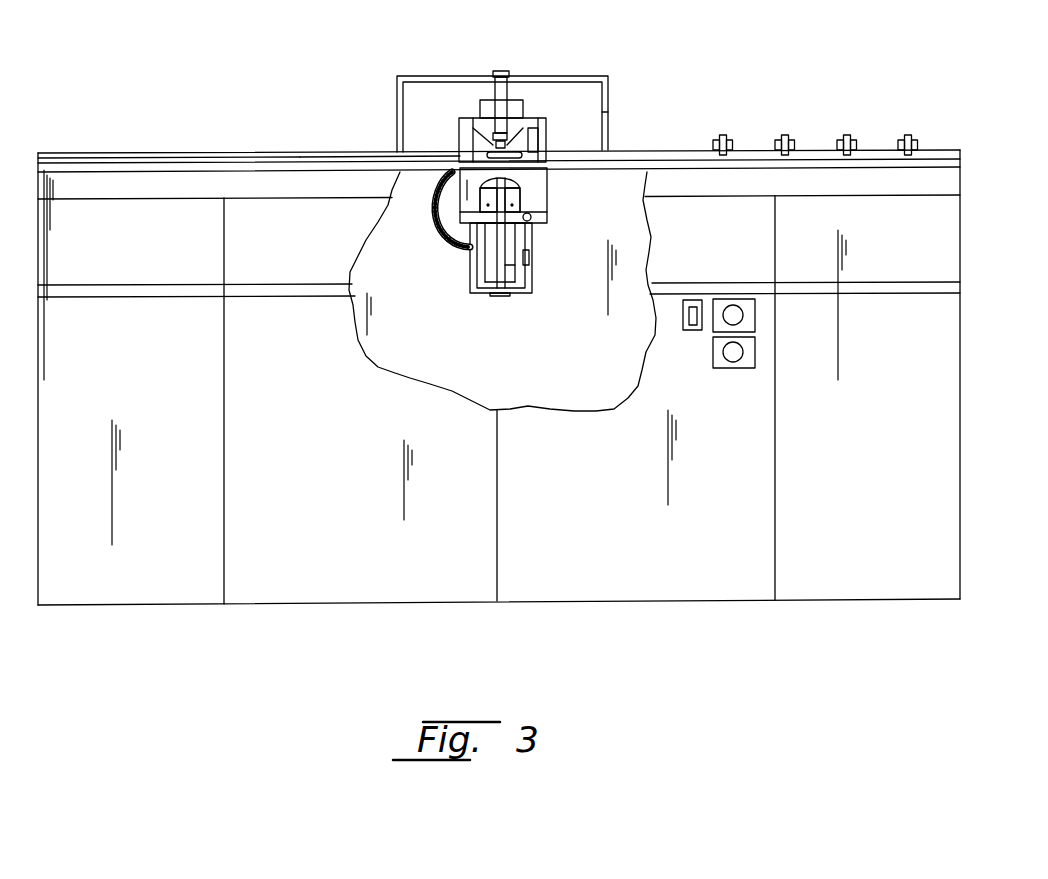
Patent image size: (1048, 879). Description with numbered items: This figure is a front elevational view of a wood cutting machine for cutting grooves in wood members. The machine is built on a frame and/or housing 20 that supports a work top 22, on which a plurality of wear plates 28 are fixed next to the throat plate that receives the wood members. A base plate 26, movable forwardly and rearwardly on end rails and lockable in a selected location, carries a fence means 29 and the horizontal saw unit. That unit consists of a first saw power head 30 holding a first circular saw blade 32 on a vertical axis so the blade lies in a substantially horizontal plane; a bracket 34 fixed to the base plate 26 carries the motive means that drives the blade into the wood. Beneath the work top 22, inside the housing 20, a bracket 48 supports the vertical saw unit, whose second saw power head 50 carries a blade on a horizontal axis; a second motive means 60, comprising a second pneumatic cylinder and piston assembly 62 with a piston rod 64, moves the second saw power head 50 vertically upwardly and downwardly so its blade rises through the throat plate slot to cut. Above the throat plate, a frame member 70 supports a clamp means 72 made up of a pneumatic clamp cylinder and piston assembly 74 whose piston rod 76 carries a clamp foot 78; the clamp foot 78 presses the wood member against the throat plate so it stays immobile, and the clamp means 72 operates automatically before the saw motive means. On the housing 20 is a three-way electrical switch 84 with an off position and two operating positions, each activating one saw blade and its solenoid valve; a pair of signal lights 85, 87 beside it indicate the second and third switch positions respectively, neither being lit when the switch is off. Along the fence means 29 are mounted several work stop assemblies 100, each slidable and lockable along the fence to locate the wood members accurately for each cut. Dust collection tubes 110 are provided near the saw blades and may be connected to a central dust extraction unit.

The frame and/or housing 20 is at (960, 356).
The work top 22 is at (960, 178).
The base plate 26 is at (140, 153).
The wear plates 28 is at (960, 152).
The fence means 29 is at (350, 153).
The first saw power head 30 is at (548, 108).
The first circular saw blade 32 is at (545, 178).
The bracket 34 is at (470, 142).
The bracket 48 is at (500, 188).
The second saw power head 50 is at (460, 273).
The second motive means 60 is at (531, 212).
The second pneumatic cylinder and piston assembly 62 is at (500, 198).
The piston rod 64 is at (515, 268).
The frame member 70 is at (606, 78).
The clamp means 72 is at (501, 71).
The pneumatic clamp cylinder and piston assembly 74 is at (508, 100).
The piston rod 76 is at (478, 128).
The clamp foot 78 is at (487, 152).
The three-way electrical switch 84 is at (683, 310).
The signal light 85 is at (743, 314).
The signal light 87 is at (743, 353).
The work stop assemblies 100 is at (723, 135).
The dust collection tubes 110 is at (437, 208).